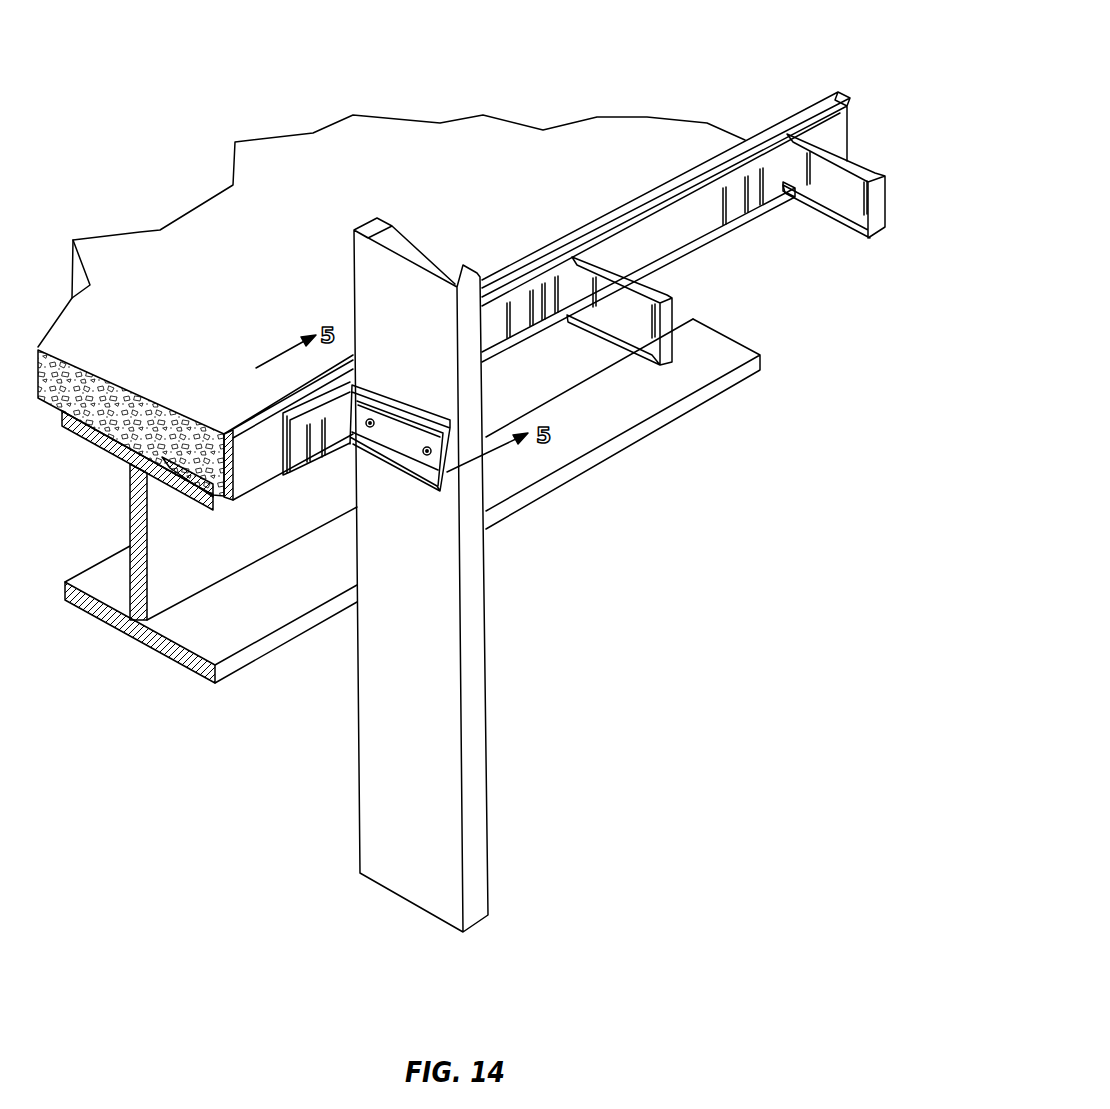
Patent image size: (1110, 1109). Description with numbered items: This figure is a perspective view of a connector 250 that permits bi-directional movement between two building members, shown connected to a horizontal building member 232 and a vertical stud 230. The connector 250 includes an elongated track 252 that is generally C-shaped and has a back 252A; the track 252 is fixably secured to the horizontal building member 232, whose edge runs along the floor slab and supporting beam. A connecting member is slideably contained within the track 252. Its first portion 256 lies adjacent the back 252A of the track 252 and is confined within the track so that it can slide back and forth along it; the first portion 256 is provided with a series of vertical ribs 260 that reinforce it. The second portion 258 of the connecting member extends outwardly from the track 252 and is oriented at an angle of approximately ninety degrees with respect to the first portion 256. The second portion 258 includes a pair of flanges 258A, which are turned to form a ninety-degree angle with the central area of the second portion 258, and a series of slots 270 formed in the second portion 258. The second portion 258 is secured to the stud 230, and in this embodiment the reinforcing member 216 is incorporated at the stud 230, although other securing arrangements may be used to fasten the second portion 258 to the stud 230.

The reinforcing member 216 is at (352, 512).
The stud 230 is at (446, 648).
The I-beam floor support 232 is at (213, 494).
The connector 250 is at (516, 260).
The elongated track 252 is at (820, 93).
The back 252A is at (628, 254).
The first portion 256 is at (303, 445).
The second portion 258 is at (628, 318).
The flanges 258A is at (847, 176).
The vertical ribs 260 is at (780, 137).
The slots 270 is at (866, 213).